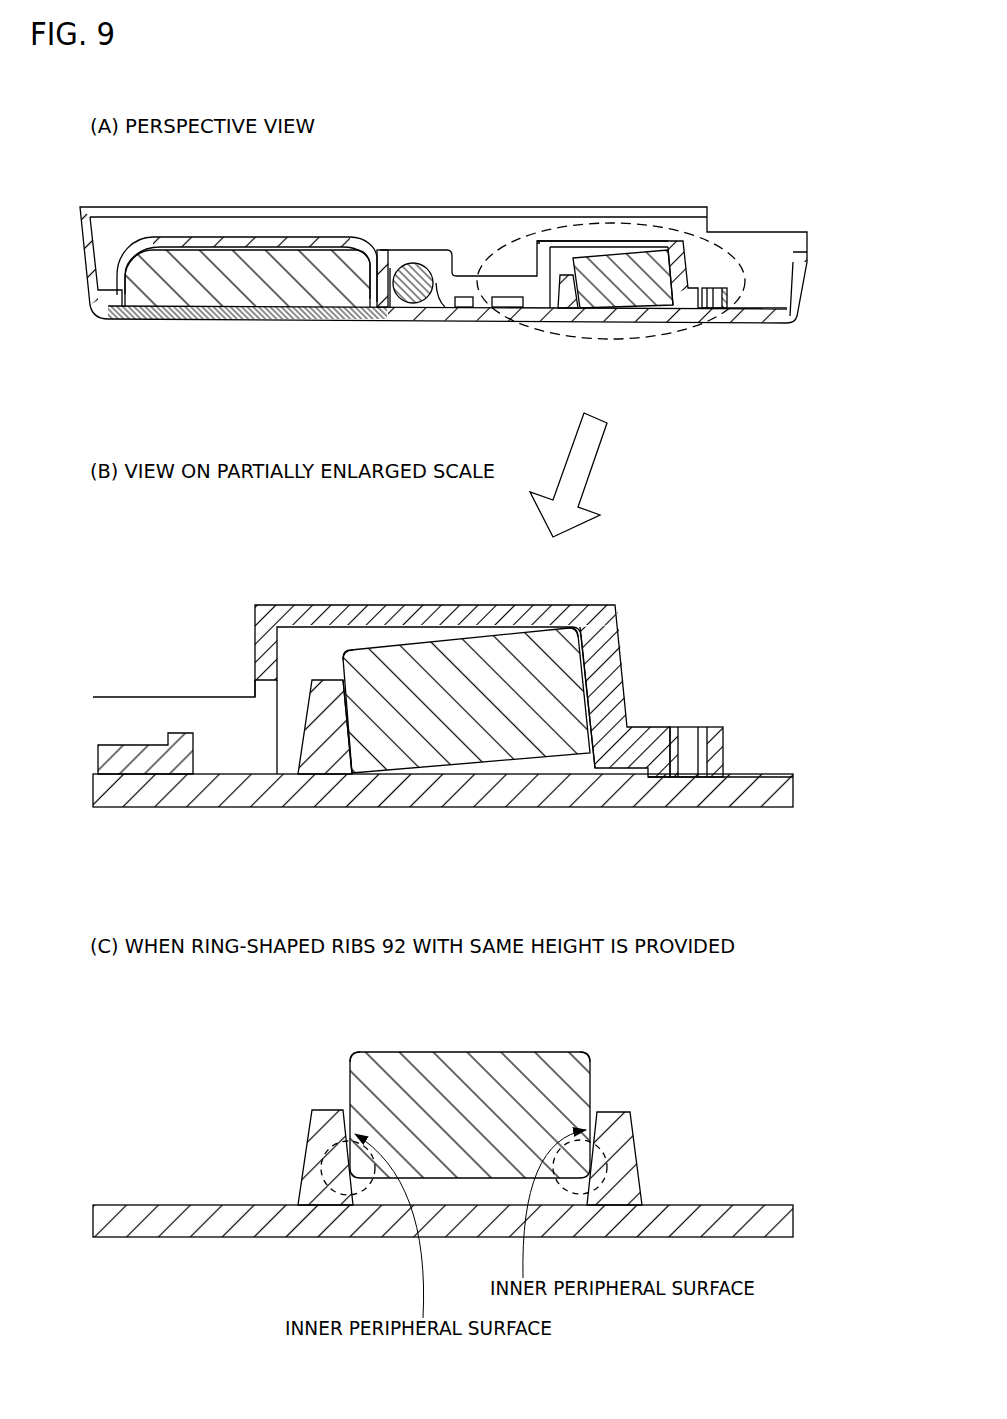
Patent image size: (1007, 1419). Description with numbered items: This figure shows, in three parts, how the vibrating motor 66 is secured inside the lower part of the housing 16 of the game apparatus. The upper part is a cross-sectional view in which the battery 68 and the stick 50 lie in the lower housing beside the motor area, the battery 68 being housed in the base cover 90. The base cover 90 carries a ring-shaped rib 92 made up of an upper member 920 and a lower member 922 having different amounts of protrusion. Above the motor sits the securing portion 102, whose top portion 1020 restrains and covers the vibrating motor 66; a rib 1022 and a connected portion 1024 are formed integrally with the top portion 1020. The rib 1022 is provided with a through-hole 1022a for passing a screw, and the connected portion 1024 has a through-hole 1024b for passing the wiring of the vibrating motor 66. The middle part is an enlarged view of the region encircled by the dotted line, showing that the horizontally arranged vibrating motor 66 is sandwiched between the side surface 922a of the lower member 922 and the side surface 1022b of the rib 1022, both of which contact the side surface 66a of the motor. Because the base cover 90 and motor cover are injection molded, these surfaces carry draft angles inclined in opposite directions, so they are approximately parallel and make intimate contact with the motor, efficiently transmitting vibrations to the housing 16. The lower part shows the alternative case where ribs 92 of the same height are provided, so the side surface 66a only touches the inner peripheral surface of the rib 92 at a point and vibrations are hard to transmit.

The housing 16 is at (338, 198).
The stick 50 is at (403, 303).
The vibrating motor 66 is at (633, 292).
The side surface of the vibrating motor 66a is at (334, 699).
The battery 68 is at (237, 292).
The base cover 90 is at (447, 312).
The ring-shaped rib 92 is at (564, 262).
The securing portion 102 is at (621, 230).
The upper member 920 is at (707, 323).
The lower member 922 is at (570, 300).
The side surface of the lower member 922a is at (357, 728).
The top portion 1020 is at (655, 232).
The rib 1022 is at (700, 240).
The through-hole 1022a is at (800, 257).
The side surface of the rib 1022b is at (580, 688).
The connected portion 1024 is at (538, 248).
The through-hole 1024b is at (536, 285).